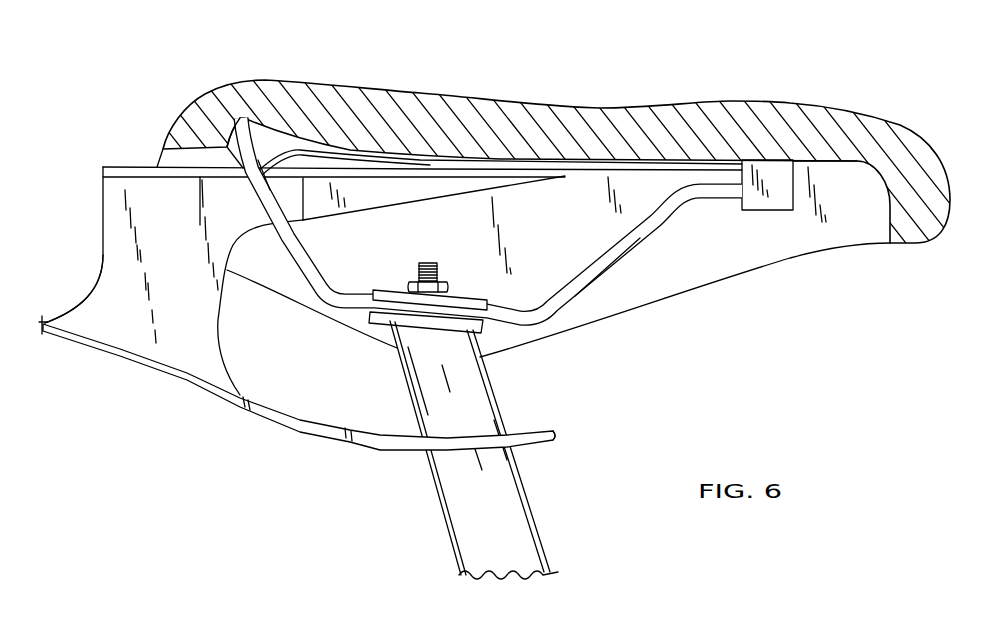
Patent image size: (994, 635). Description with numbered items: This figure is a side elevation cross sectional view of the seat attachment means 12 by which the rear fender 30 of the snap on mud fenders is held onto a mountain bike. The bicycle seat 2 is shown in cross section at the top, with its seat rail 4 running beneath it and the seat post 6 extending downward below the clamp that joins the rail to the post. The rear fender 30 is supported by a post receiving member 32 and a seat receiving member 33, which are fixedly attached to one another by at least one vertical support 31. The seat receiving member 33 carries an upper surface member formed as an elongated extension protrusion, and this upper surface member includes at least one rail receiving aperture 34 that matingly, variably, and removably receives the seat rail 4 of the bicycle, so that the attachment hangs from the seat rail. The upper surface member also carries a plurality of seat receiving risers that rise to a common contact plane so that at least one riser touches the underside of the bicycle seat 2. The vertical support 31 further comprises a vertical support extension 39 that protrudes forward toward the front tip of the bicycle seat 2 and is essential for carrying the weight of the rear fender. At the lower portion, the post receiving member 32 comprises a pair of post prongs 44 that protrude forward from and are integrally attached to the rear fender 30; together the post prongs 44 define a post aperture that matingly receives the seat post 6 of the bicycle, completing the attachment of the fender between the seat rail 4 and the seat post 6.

The bicycle seat 2 is at (597, 108).
The seat rail 4 is at (620, 258).
The seat post 6 is at (517, 529).
The seat attachment means 12 is at (150, 398).
The rear fender 30 is at (47, 333).
The vertical support 31 is at (205, 327).
The post receiving member 32 is at (253, 413).
The seat receiving member 33 is at (133, 167).
The rail receiving aperture 34 is at (227, 147).
The vertical support extension 39 is at (280, 150).
The post prongs 44 is at (540, 427).